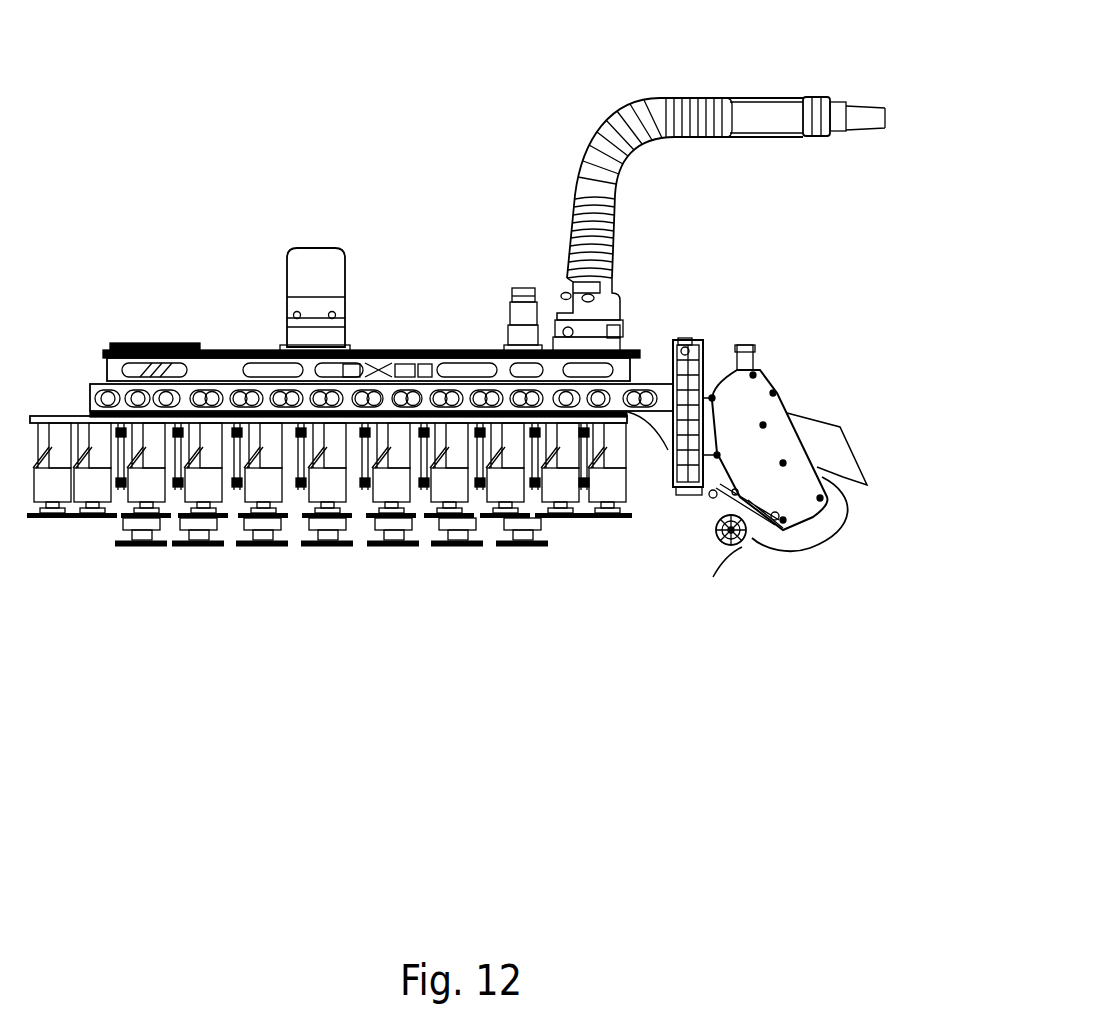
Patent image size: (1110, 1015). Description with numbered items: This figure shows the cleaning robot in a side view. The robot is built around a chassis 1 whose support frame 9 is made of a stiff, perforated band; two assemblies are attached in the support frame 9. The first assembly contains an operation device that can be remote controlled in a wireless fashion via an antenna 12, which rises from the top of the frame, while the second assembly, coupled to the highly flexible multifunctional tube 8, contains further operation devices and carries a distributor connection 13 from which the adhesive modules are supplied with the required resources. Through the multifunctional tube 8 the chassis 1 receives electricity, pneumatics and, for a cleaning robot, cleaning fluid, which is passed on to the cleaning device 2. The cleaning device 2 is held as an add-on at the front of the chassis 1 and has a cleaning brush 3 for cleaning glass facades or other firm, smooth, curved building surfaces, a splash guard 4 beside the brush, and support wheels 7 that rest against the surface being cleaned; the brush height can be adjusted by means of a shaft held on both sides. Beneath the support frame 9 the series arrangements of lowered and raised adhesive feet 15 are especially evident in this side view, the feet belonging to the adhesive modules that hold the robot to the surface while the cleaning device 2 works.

The chassis 1 is at (203, 195).
The cleaning device 2 is at (814, 357).
The cleaning brush 3 is at (803, 533).
The splash guard 4 is at (817, 443).
The support wheels 7 is at (730, 548).
The multifunctional tube 8 is at (612, 120).
The support frame 9 is at (105, 373).
The antenna 12 is at (318, 267).
The distributor connection 13 is at (523, 313).
The adhesive feet 15 is at (393, 557).